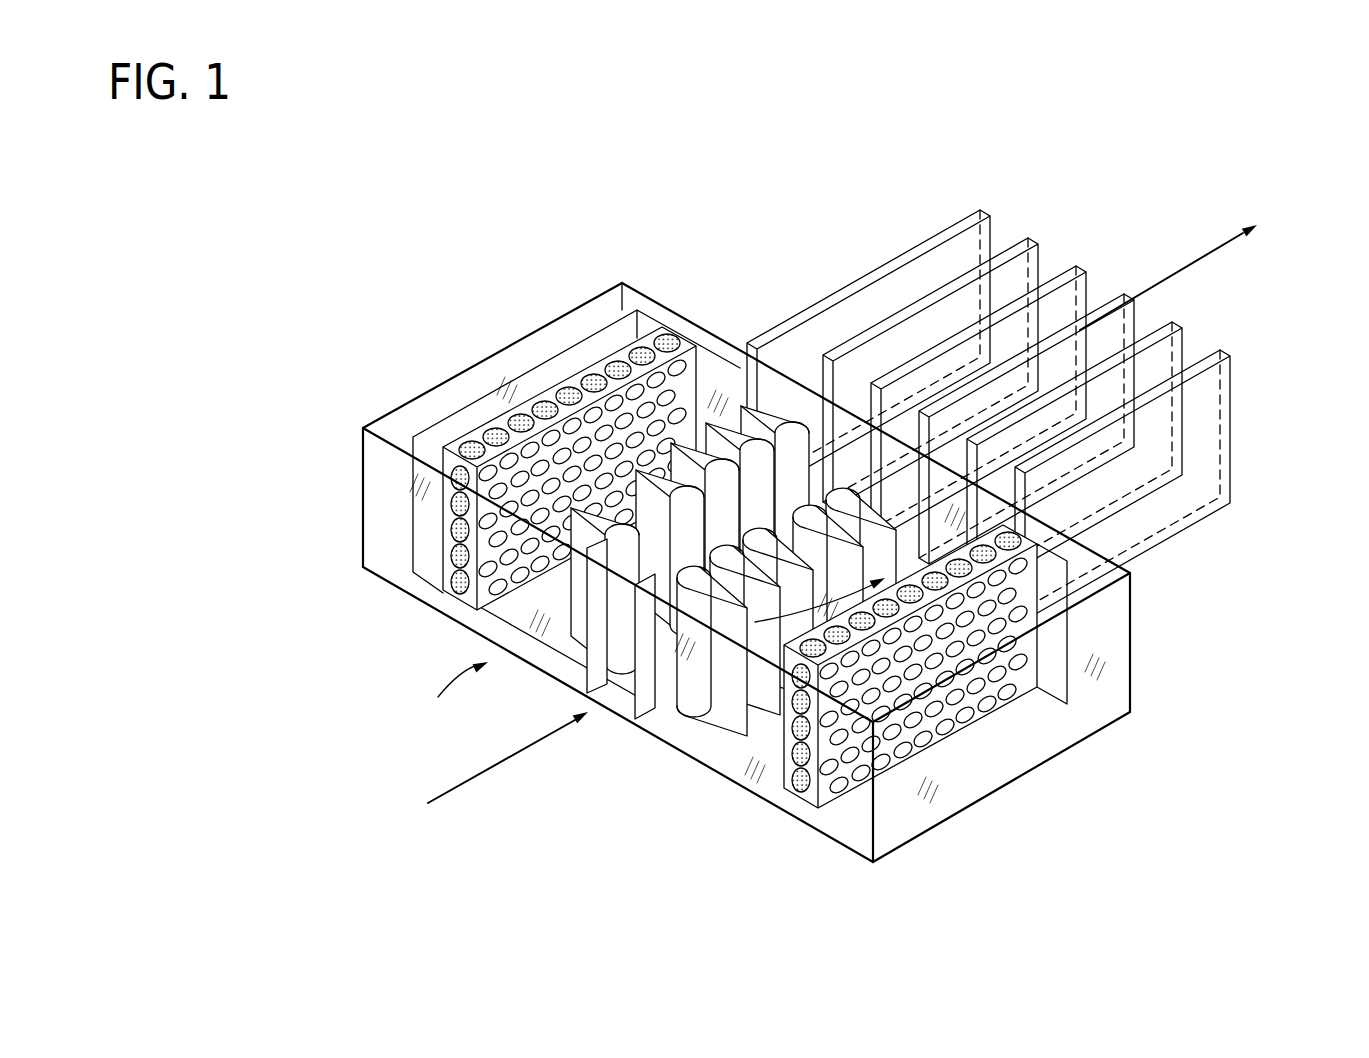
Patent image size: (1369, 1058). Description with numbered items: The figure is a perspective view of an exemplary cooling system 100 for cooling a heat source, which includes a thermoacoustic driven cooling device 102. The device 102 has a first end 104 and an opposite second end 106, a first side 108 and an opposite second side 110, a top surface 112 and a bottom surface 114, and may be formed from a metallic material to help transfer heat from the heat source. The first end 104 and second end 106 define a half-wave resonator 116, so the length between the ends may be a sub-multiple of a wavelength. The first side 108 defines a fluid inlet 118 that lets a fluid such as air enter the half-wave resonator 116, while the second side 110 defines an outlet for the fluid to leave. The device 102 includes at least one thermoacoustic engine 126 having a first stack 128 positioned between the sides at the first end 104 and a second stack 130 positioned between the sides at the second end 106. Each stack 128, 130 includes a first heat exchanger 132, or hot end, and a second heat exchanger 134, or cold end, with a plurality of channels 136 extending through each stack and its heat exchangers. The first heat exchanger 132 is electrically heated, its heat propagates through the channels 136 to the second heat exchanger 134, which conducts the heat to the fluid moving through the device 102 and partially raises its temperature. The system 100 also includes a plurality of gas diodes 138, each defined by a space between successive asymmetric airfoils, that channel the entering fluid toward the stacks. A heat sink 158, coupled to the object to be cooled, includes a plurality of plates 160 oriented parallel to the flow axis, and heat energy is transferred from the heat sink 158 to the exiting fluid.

The cooling system 100 is at (455, 193).
The thermoacoustic driven cooling device 102 is at (765, 556).
The first end 104 is at (363, 428).
The second end 106 is at (1103, 727).
The first side 108 is at (400, 577).
The second side 110 is at (663, 310).
The top surface 112 is at (1103, 583).
The bottom surface 114 is at (740, 787).
The half-wave resonator 116 is at (638, 688).
The fluid inlet 118 is at (625, 683).
The thermoacoustic engine 126 is at (788, 800).
The first stack 128 is at (557, 403).
The second stack 130 is at (1005, 530).
The first heat exchanger 132 is at (796, 567).
The second heat exchanger 134 is at (480, 607).
The channels 136 is at (513, 543).
The gas diodes 138 is at (726, 508).
The heat sink 158 is at (1195, 316).
The plates 160 is at (1225, 352).